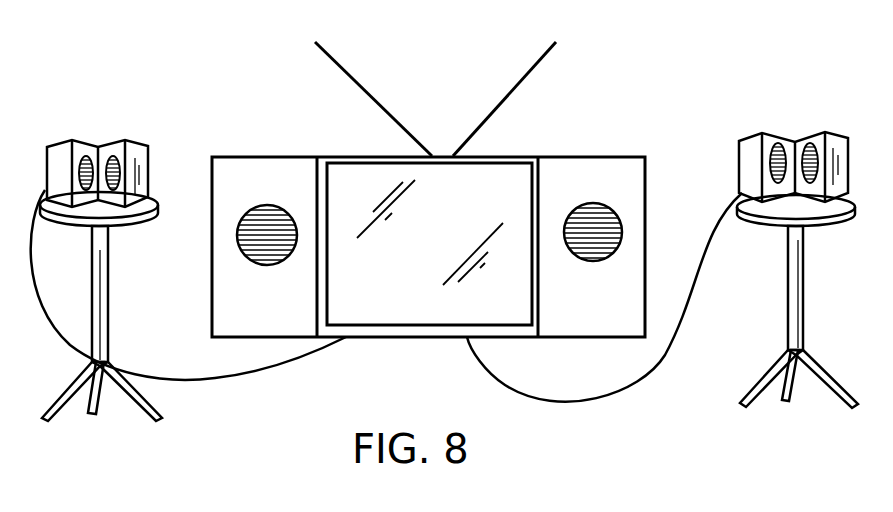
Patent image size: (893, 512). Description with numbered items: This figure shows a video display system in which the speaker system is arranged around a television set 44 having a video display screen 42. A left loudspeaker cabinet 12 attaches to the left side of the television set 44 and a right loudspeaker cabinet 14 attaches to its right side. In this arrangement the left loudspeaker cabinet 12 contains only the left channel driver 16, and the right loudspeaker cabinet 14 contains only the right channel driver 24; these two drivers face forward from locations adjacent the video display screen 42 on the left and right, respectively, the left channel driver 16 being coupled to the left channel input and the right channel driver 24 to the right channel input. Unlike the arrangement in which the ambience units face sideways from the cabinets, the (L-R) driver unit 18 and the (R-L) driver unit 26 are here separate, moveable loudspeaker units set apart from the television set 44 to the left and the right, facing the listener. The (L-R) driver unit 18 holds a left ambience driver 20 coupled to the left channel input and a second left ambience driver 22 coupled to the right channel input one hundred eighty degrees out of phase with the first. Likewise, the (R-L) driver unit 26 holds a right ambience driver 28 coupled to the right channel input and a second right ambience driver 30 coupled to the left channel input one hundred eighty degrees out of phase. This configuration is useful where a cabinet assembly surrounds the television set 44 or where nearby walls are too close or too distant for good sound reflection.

The left loudspeaker cabinet 12 is at (232, 157).
The right loudspeaker cabinet 14 is at (600, 156).
The left channel driver 16 is at (251, 205).
The (L-R) driver unit 18 is at (150, 93).
The left ambience driver 20 is at (87, 157).
The left ambience driver 22 is at (113, 157).
The right channel driver 24 is at (602, 203).
The (R-L) driver unit 26 is at (727, 122).
The right ambience driver 28 is at (810, 145).
The right ambience driver 30 is at (777, 145).
The video display screen 42 is at (527, 156).
The television set 44 is at (492, 156).